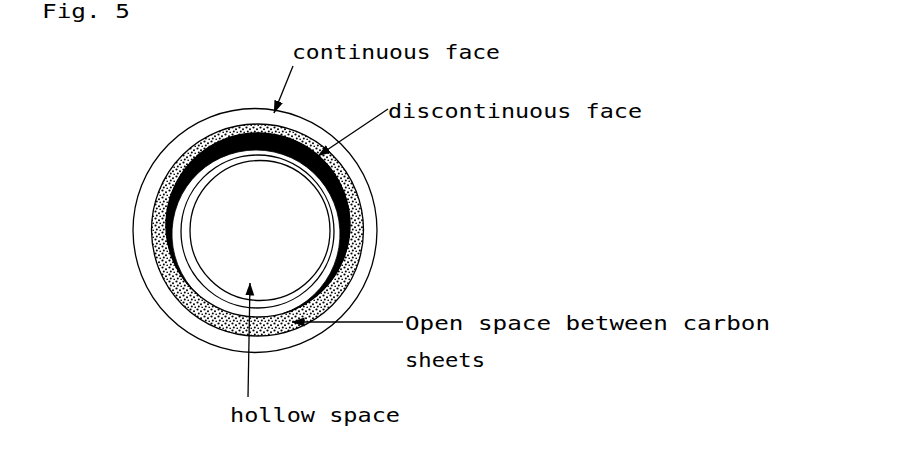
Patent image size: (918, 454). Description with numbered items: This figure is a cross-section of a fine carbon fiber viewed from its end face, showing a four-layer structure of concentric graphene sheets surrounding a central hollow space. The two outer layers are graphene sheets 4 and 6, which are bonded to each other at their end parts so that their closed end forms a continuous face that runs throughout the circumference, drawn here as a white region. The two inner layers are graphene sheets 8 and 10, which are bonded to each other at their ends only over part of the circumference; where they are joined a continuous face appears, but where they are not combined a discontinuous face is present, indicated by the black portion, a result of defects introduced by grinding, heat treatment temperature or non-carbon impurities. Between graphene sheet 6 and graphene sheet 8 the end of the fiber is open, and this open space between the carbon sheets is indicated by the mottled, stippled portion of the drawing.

The graphene sheet 4 is at (130, 241).
The graphene sheet 6 is at (152, 262).
The graphene sheet 8 is at (193, 305).
The graphene sheet 10 is at (232, 303).